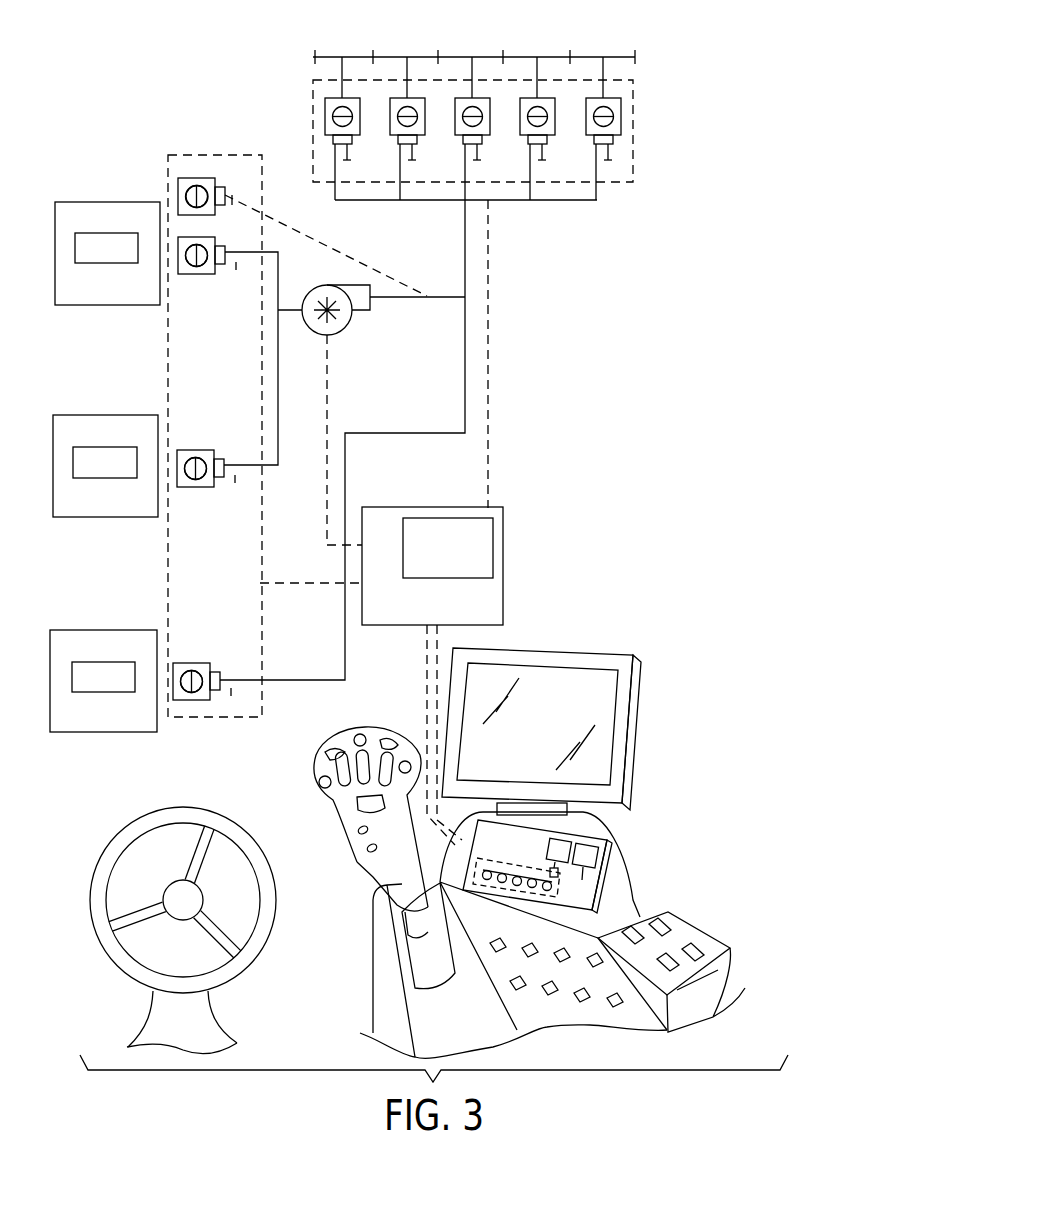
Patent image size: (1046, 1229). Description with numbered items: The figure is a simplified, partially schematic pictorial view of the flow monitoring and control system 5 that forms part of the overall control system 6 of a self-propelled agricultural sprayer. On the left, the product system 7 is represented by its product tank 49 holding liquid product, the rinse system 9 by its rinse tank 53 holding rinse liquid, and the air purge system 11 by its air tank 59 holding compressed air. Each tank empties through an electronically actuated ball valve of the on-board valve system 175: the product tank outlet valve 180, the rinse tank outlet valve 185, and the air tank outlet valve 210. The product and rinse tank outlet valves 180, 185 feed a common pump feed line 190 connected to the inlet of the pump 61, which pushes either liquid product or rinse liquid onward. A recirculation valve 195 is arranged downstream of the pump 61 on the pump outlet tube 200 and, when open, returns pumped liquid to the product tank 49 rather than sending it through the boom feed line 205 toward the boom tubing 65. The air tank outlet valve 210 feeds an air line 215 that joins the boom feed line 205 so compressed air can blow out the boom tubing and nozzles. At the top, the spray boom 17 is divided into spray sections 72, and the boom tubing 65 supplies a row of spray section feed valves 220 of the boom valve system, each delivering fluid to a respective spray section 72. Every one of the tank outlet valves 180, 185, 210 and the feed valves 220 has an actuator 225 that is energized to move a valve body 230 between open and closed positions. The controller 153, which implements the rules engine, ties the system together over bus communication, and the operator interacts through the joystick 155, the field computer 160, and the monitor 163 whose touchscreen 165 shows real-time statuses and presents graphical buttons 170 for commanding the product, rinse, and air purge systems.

The flow monitoring and control system 5 is at (634, 447).
The control system 6 is at (713, 345).
The product system 7 is at (110, 200).
The rinse system 9 is at (108, 414).
The air purge system 11 is at (105, 629).
The spray boom 17 is at (690, 28).
The product tank 49 is at (122, 272).
The rinse tank 53 is at (122, 486).
The air tank 59 is at (120, 700).
The pump 61 is at (345, 275).
The boom tubing 65 is at (566, 205).
The spray sections 72 is at (339, 50).
The controller 153 is at (503, 586).
The joystick 155 is at (355, 870).
The field computer 160 is at (616, 652).
The monitor 163 is at (614, 853).
The touchscreen 165 is at (588, 878).
The graphical buttons 170 is at (552, 888).
The on-board valve system 175 is at (266, 703).
The product tank outlet valve 180 is at (640, 166).
The rinse tank outlet valve 185 is at (203, 492).
The pump feed line 190 is at (279, 362).
The recirculation valve 195 is at (192, 173).
The pump outlet tube 200 is at (403, 298).
The boom feed line 205 is at (488, 283).
The air tank outlet valve 210 is at (190, 706).
The air line 215 is at (406, 433).
The spray section feed valves 220 is at (497, 116).
The actuator 225 is at (332, 139).
The valve body 230 is at (460, 110).